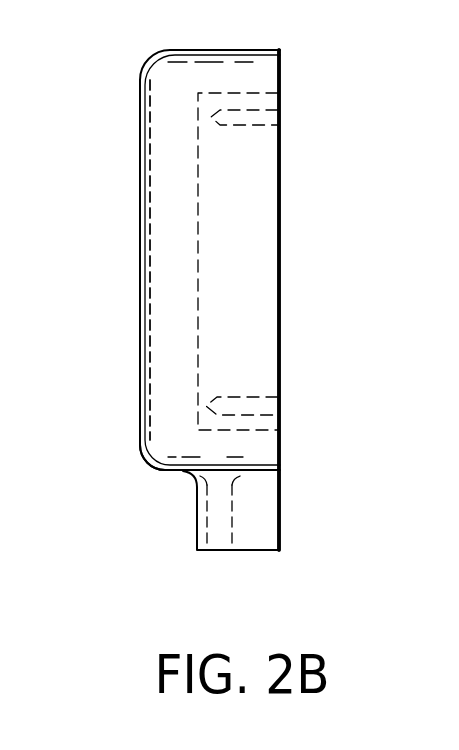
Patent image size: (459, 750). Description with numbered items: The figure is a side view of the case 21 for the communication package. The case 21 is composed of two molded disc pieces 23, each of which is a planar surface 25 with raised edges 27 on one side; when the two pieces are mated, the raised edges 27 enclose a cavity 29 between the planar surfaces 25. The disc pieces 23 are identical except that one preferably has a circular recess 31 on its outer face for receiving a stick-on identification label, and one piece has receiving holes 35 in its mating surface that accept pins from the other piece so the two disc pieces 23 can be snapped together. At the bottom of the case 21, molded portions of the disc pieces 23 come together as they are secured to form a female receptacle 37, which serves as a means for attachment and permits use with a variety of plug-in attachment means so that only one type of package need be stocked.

The case 21 is at (300, 223).
The disc pieces 23 is at (150, 457).
The planar surfaces 25 is at (140, 186).
The raised edges 27 is at (266, 46).
The cavity 29 is at (260, 315).
The circular recess 31 is at (176, 280).
The receiving holes 35 is at (282, 117).
The female receptacle 37 is at (260, 521).